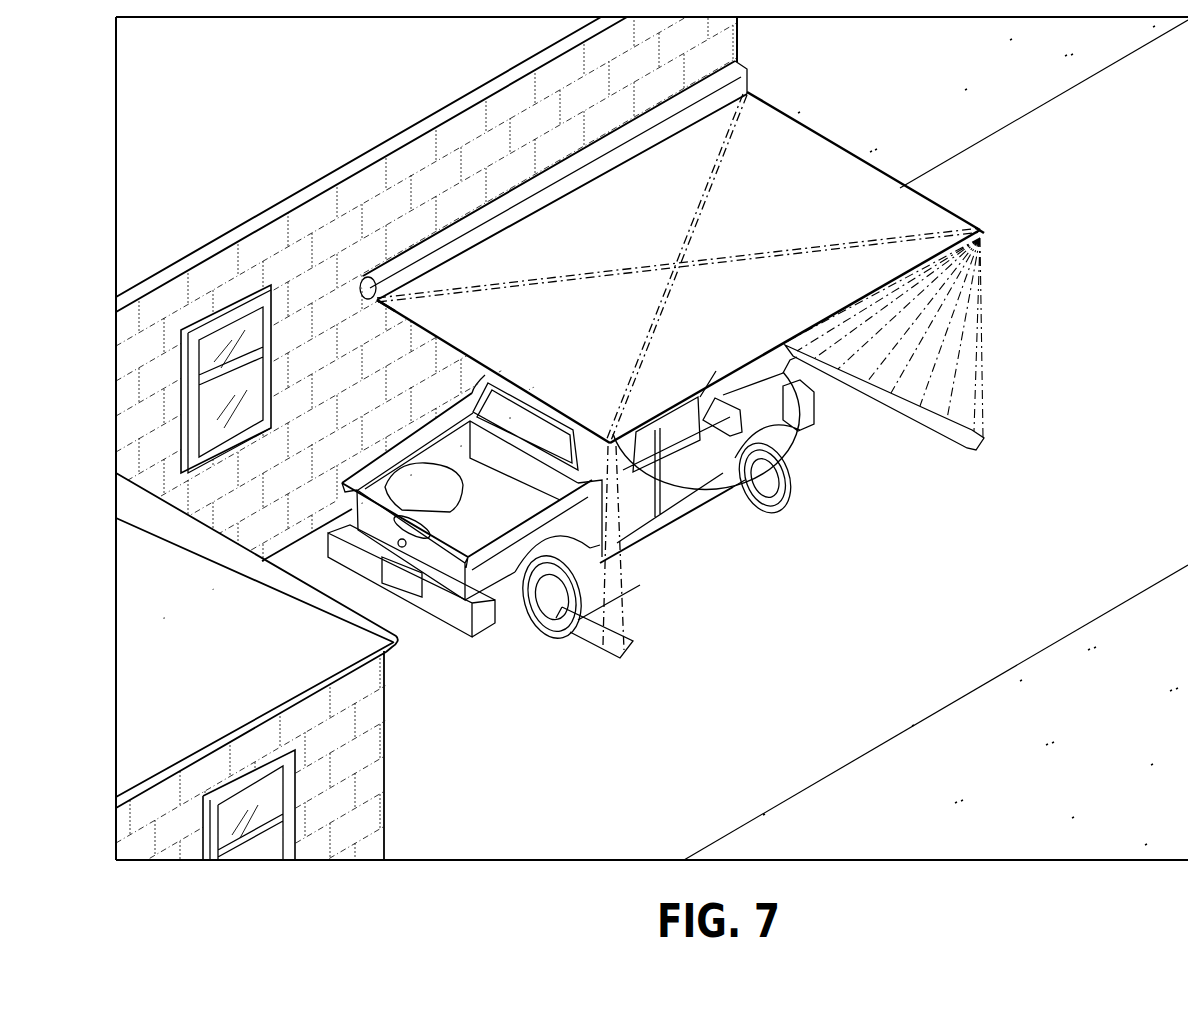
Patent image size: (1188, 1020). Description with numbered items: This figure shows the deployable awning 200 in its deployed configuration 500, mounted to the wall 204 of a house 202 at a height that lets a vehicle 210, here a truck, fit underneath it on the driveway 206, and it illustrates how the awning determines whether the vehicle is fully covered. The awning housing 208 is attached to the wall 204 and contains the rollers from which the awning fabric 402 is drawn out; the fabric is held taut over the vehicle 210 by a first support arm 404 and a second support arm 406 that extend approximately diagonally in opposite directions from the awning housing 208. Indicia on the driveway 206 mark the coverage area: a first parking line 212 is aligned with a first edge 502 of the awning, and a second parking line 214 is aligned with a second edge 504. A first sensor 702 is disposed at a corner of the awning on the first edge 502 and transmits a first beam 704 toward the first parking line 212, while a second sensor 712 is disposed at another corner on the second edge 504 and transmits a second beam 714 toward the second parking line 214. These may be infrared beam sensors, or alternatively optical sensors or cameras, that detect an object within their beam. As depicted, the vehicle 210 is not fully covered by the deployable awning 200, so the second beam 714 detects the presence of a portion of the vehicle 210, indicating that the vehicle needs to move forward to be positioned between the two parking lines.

The deployable awning 200 is at (721, 244).
The house 202 is at (748, 33).
The wall 204 is at (398, 216).
The driveway 206 is at (968, 651).
The awning housing 208 is at (749, 80).
The vehicle 210 is at (813, 427).
The first parking line 212 is at (976, 438).
The second parking line 214 is at (610, 638).
The awning fabric 402 is at (738, 267).
The first support arm 404 is at (705, 203).
The second support arm 406 is at (605, 272).
The deployed configuration 500 is at (721, 244).
The first edge 502 is at (905, 185).
The second edge 504 is at (410, 333).
The first sensor 702 is at (982, 230).
The first beam 704 is at (990, 300).
The second sensor 712 is at (757, 487).
The second beam 714 is at (622, 617).